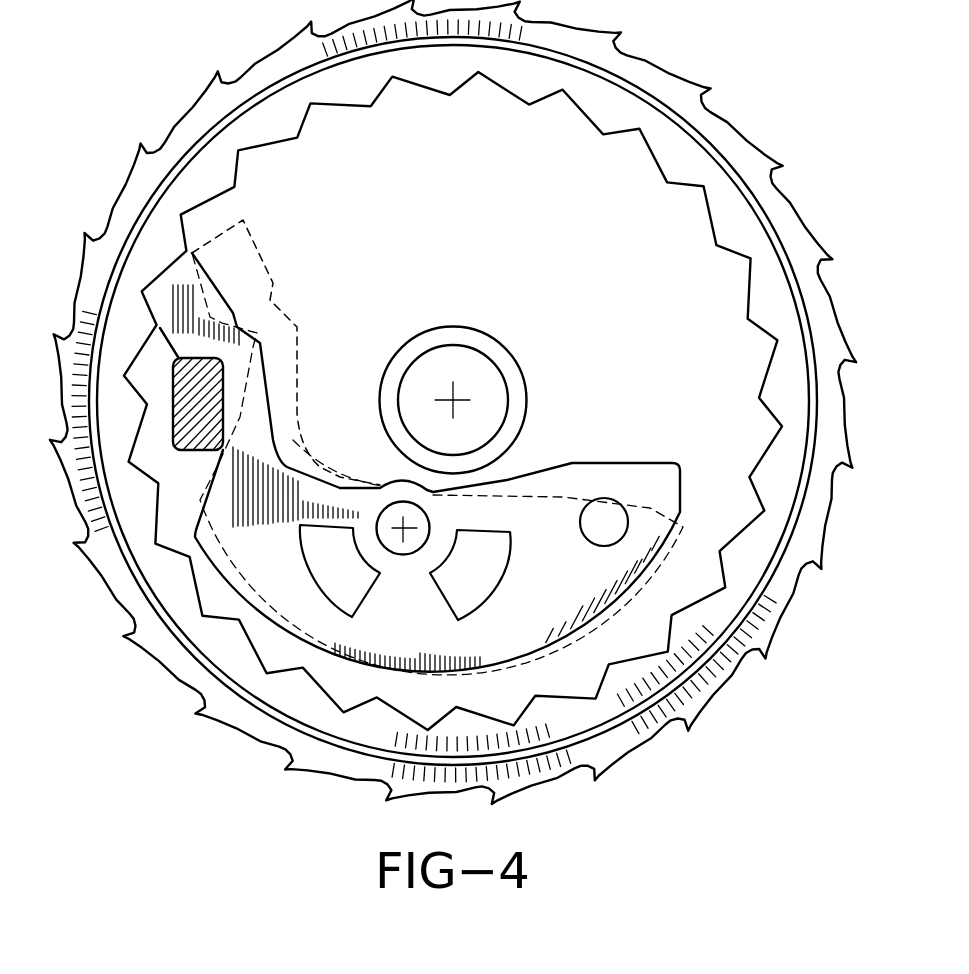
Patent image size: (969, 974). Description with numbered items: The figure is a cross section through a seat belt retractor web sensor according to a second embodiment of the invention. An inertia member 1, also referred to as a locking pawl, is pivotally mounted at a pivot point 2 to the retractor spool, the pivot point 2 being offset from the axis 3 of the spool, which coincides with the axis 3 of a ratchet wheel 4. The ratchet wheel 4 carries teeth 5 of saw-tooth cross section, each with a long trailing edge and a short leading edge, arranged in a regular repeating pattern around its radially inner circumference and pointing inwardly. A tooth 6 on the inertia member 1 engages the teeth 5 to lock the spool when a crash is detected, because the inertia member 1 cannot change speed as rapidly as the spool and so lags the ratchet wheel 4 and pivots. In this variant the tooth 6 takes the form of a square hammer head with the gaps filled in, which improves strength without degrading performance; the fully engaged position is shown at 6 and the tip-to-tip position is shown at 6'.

The inertia member 1 is at (564, 595).
The pivot point 2 is at (403, 528).
The axis 3 is at (453, 400).
The ratchet wheel 4 is at (285, 690).
The teeth 5 is at (160, 548).
The tooth 6 is at (187, 359).
The tip-to-tip position of the tooth 6' is at (286, 352).